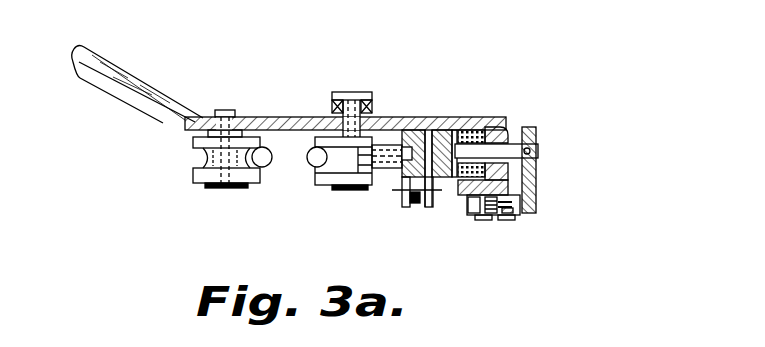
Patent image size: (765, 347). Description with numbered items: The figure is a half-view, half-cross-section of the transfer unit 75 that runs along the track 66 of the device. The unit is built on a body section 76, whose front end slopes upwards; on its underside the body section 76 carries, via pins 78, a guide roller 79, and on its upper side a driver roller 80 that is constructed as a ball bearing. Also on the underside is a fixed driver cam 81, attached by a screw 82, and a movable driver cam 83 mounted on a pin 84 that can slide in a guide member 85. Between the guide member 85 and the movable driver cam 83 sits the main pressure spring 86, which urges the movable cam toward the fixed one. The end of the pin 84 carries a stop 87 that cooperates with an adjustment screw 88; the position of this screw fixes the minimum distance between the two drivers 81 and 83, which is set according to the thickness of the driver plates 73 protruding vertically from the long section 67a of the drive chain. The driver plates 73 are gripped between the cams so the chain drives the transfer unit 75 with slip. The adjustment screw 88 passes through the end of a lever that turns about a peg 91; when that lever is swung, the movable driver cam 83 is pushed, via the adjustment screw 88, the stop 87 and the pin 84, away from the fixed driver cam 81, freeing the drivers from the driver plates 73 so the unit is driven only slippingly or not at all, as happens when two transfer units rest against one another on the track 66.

The track 66 is at (290, 176).
The long section of drive chain 67a is at (418, 205).
The driver plates 73 is at (443, 178).
The transfer unit 75 is at (263, 100).
The body section 76 is at (113, 73).
The pins 78 is at (217, 188).
The guide roller 79 is at (202, 177).
The driver roller 80 is at (331, 103).
The fixed driver cam 81 is at (414, 135).
The screw 82 is at (392, 150).
The movable driver cam 83 is at (441, 135).
The pin 84 is at (500, 130).
The guide member 85 is at (498, 147).
The main pressure spring 86 is at (466, 135).
The stop 87 is at (534, 172).
The adjustment screw 88 is at (512, 205).
The peg 91 is at (490, 220).